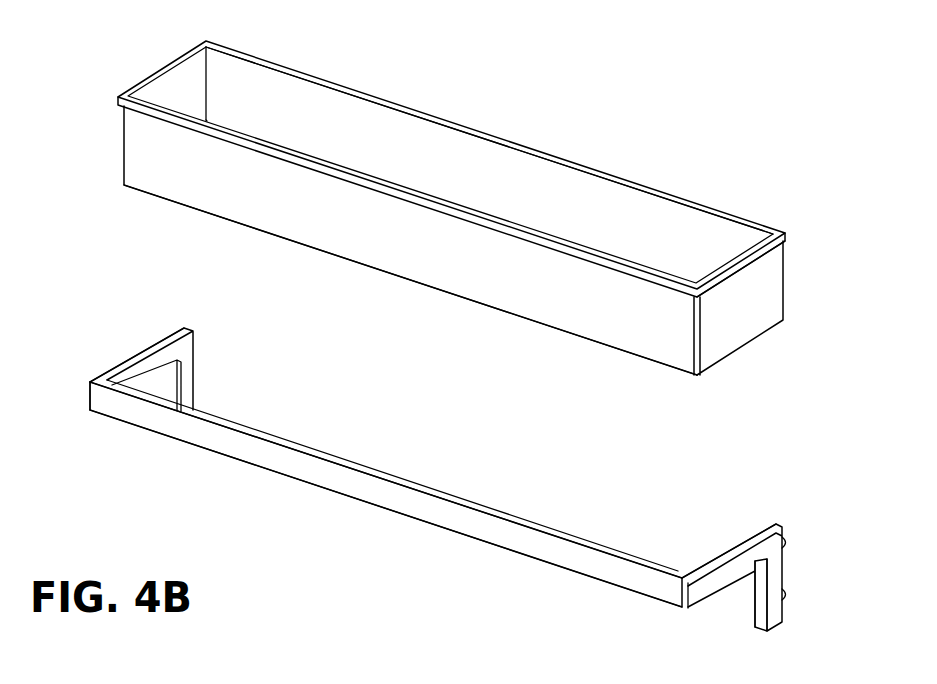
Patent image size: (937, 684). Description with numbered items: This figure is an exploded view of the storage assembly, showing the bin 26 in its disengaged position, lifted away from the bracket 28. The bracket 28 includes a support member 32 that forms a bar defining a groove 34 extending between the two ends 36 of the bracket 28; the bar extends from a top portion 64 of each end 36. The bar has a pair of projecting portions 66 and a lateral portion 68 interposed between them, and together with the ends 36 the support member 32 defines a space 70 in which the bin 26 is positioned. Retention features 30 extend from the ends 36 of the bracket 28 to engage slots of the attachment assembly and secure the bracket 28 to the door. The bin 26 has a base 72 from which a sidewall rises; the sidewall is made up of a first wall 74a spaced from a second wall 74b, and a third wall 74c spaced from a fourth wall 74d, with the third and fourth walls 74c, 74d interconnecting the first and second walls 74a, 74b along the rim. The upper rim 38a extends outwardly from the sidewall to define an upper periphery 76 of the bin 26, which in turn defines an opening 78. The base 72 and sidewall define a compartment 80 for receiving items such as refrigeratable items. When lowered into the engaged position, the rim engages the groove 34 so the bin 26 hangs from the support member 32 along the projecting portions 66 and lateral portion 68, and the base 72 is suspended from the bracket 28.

The bin 26 is at (446, 198).
The bracket 28 is at (473, 468).
The retention feature 30 is at (788, 545).
The support member 32 is at (418, 525).
The groove 34 is at (122, 373).
The ends 36 is at (203, 397).
The upper rim 38a is at (743, 260).
The top portion 64 is at (185, 326).
The projecting portions 66 is at (158, 342).
The lateral portion 68 is at (287, 463).
The space 70 is at (401, 462).
The base 72 is at (437, 288).
The first wall 74a is at (740, 323).
The second wall 74b is at (162, 90).
The third wall 74c is at (265, 203).
The fourth wall 74d is at (342, 115).
The upper periphery 76 is at (718, 205).
The opening 78 is at (117, 88).
The compartment 80 is at (430, 183).